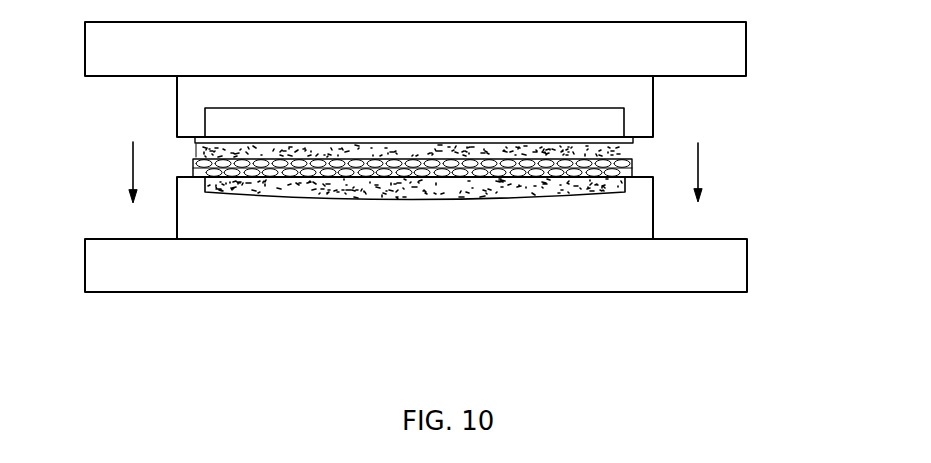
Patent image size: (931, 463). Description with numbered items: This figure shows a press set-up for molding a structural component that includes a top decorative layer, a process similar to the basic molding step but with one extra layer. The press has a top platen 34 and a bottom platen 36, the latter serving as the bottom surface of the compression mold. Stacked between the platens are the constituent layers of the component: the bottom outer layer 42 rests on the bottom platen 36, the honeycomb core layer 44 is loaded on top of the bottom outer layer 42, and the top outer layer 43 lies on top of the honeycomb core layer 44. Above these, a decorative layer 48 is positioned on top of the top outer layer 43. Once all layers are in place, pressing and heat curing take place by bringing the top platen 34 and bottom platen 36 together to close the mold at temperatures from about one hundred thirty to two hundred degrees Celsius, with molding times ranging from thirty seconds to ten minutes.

The top platen 34 is at (177, 115).
The bottom platen 36 is at (110, 270).
The bottom outer layer 42 is at (347, 189).
The top outer layer 43 is at (617, 150).
The honeycomb core layer 44 is at (632, 168).
The decorative layer 48 is at (637, 141).